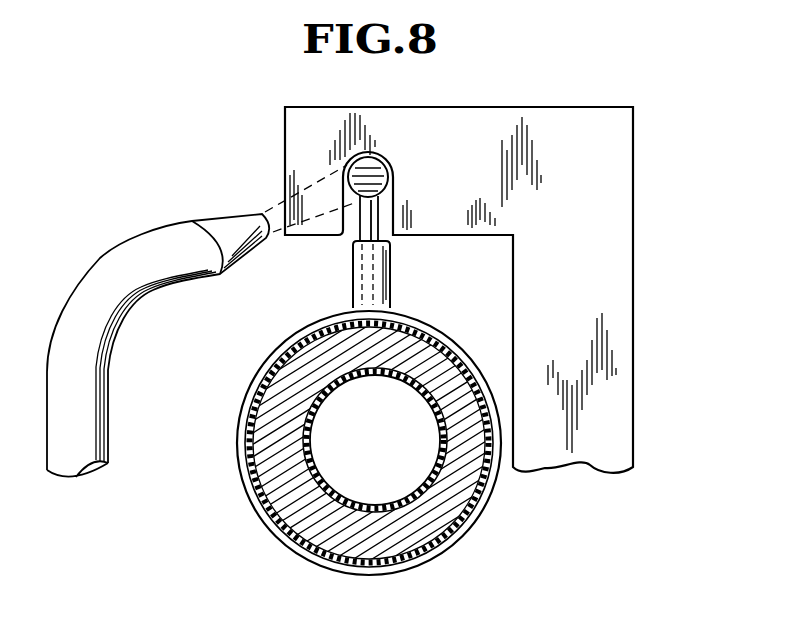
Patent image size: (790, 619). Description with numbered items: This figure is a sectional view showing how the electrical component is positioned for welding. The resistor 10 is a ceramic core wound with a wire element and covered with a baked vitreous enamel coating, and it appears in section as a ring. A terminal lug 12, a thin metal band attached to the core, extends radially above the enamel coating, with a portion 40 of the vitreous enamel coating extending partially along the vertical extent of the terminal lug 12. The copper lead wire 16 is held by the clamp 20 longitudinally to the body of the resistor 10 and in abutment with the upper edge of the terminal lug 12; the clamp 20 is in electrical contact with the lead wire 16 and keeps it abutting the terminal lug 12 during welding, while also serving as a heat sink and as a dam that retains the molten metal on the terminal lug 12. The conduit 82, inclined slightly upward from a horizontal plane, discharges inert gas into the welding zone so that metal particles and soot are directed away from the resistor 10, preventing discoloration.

The resistor 10 is at (258, 383).
The terminal lug 12 is at (370, 218).
The copper wire 16 is at (371, 170).
The clamp 20 is at (617, 312).
The portion of the vitreous enamel coating 40 is at (390, 268).
The conduit 82 is at (122, 255).